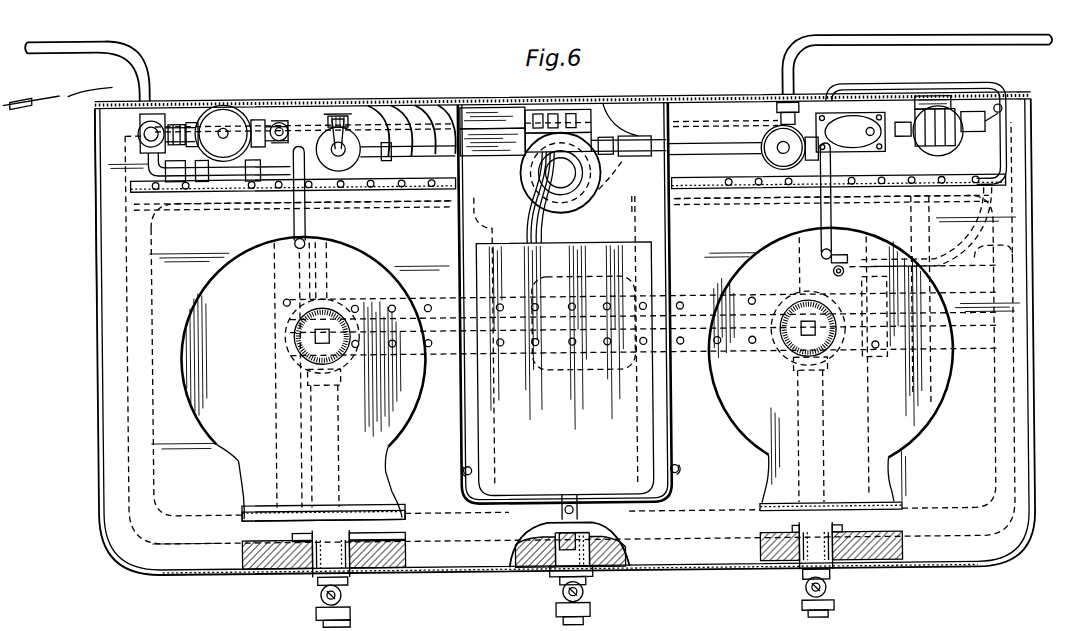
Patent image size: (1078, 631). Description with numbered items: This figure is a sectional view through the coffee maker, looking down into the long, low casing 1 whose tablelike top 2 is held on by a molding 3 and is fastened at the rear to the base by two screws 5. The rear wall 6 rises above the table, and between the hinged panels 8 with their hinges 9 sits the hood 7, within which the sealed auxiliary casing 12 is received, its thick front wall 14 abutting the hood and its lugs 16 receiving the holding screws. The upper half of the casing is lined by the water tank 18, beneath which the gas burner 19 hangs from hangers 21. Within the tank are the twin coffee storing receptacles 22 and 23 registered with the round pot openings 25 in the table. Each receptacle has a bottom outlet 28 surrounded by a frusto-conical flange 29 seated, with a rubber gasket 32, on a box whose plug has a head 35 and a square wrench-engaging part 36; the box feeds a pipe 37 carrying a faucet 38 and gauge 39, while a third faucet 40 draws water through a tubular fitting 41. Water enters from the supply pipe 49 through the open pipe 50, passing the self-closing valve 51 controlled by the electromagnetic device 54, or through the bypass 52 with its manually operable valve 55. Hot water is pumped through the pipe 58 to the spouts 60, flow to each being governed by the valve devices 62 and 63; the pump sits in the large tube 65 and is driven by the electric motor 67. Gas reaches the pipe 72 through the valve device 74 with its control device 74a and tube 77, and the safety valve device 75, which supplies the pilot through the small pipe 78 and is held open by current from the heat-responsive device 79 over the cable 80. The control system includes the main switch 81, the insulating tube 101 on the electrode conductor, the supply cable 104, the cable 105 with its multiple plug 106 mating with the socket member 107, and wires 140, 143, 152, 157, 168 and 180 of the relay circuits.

The casing 1 is at (94, 380).
The top 2 is at (101, 294).
The molding 3 is at (100, 245).
The screws 5 is at (343, 109).
The rear wall 6 is at (512, 97).
The hood 7 is at (773, 256).
The panels 8 is at (100, 196).
The hinges 9 is at (573, 355).
The auxiliary casing 12 is at (503, 420).
The front wall 14 is at (532, 445).
The lugs 16 is at (462, 470).
The tank 18 is at (253, 572).
The gas burner 19 is at (897, 350).
The hangers 21 is at (290, 411).
The receptacle 22 is at (362, 505).
The receptacle 23 is at (890, 478).
The pot openings 25 is at (207, 280).
The outlet 28 is at (831, 575).
The frusto-conical flange 29 is at (678, 618).
The rubber gasket 32 is at (538, 625).
The head 35 is at (308, 348).
The wrench-engaging part 36 is at (315, 335).
The pipe 37 is at (398, 510).
The faucet 38 is at (833, 611).
The gauge 39 is at (345, 597).
The faucet 40 is at (590, 611).
The tubular fitting 41 is at (575, 535).
The supply pipe 49 is at (87, 71).
The open pipe 50 is at (284, 112).
The self-closing valve 51 is at (622, 184).
The bypass 52 is at (277, 178).
The electromagnetic device 54 is at (213, 108).
The manually operable valve 55 is at (227, 178).
The pipe 58 is at (505, 153).
The spouts 60 is at (308, 203).
The valve device 62 is at (393, 98).
The valve device 63 is at (782, 165).
The tube 65 is at (536, 206).
The electric motor 67 is at (528, 180).
The pipe 72 is at (990, 45).
The valve device 74 is at (915, 170).
The control device 74a is at (935, 108).
The valve device 75 is at (850, 132).
The tube 77 is at (905, 140).
The pipe 78 is at (1036, 292).
The device 79 is at (845, 262).
The cable 80 is at (928, 85).
The main switch 81 is at (567, 533).
The tube 101 is at (328, 283).
The cable 104 is at (70, 92).
The cable 105 is at (548, 230).
The multiple plug 106 is at (640, 104).
The multiple socket member 107 is at (598, 130).
The wire 140 is at (390, 102).
The wire 143 is at (428, 100).
The wire 152 is at (567, 172).
The wire 157 is at (428, 97).
The wire 168 is at (358, 105).
The wire 180 is at (345, 108).